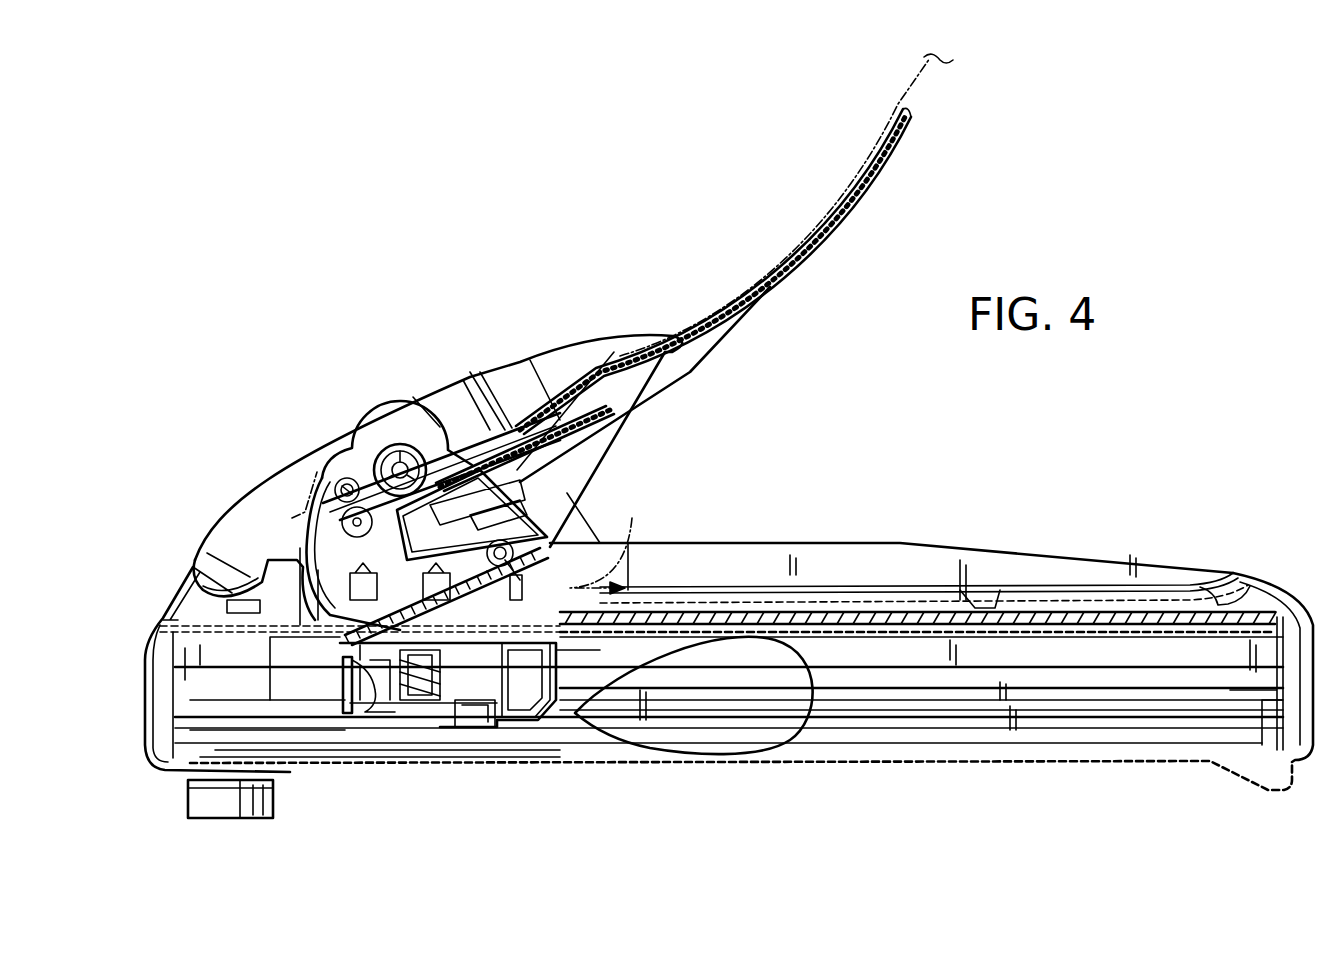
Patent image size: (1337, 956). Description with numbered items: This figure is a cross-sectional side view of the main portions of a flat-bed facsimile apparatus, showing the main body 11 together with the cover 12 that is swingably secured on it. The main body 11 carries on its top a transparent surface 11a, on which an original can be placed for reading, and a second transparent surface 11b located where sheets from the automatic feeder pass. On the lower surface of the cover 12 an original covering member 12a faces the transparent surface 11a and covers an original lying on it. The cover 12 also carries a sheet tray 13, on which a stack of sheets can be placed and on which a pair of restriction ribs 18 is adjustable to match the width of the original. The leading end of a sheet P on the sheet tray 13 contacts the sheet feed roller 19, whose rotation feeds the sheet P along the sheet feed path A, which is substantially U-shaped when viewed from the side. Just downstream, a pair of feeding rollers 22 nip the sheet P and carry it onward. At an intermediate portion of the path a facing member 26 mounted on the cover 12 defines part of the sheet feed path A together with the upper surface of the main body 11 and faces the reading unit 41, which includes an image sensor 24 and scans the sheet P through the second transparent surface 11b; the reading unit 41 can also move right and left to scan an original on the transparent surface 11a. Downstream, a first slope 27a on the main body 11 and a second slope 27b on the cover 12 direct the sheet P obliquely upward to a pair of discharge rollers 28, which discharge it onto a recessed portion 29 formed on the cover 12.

The main body 11 is at (140, 642).
The transparent surface 11a is at (820, 615).
The second transparent surface 11b is at (345, 648).
The cover 12 is at (228, 497).
The original covering member 12a is at (935, 630).
The sheet tray 13 is at (572, 395).
The restriction ribs 18 is at (522, 372).
The sheet feed roller 19 is at (398, 440).
The feeding rollers 22 is at (332, 477).
The image sensor 24 is at (568, 680).
The facing member 26 is at (355, 715).
The first slope 27a is at (420, 693).
The second slope 27b is at (526, 680).
The discharge rollers 28 is at (575, 630).
The recessed portion 29 is at (688, 576).
The reading unit 41 is at (473, 730).
The sheet feed path A is at (462, 533).
The sheet P is at (913, 92).